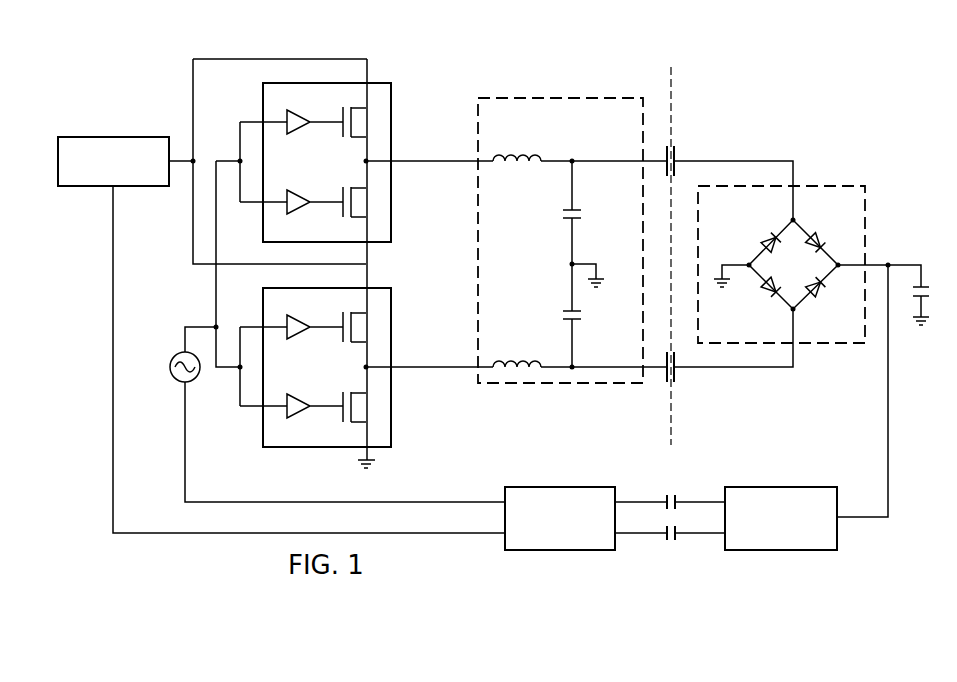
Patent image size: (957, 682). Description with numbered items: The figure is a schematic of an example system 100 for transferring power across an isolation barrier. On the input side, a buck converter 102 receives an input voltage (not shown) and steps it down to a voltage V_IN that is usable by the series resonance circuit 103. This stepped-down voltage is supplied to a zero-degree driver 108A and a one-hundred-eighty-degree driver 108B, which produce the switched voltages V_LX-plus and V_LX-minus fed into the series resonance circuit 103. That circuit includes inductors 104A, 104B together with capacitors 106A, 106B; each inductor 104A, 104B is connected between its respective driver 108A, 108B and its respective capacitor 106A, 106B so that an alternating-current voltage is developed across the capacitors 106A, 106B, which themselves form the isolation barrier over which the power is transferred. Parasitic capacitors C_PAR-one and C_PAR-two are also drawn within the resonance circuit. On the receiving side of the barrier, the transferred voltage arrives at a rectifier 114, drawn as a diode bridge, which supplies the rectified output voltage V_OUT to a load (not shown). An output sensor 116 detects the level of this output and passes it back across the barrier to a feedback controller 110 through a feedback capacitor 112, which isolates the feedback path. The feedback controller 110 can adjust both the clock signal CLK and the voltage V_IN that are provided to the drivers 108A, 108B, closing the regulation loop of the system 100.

The system 100 is at (799, 42).
The buck converter 102 is at (106, 137).
The series resonance circuit 103 is at (578, 98).
The inductor 104A is at (522, 149).
The inductor 104B is at (524, 355).
The capacitor 106A is at (677, 151).
The capacitor 106B is at (678, 380).
The 0° driver 108A is at (392, 105).
The 180° driver 108B is at (392, 423).
The feedback controller 110 is at (562, 551).
The feedback capacitor 112 is at (673, 545).
The rectifier 114 is at (800, 226).
The output sensor 116 is at (783, 551).